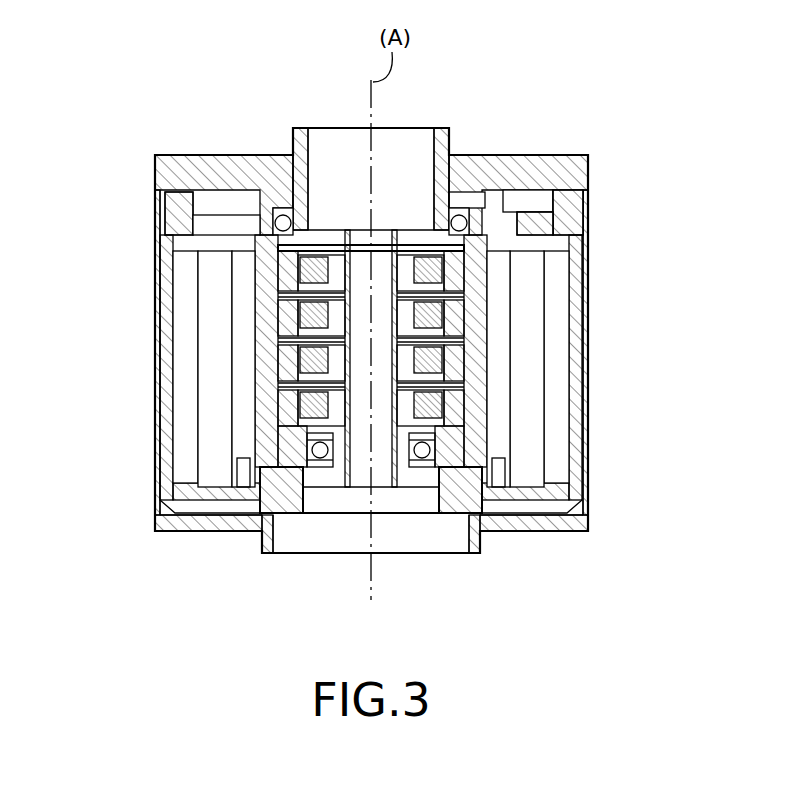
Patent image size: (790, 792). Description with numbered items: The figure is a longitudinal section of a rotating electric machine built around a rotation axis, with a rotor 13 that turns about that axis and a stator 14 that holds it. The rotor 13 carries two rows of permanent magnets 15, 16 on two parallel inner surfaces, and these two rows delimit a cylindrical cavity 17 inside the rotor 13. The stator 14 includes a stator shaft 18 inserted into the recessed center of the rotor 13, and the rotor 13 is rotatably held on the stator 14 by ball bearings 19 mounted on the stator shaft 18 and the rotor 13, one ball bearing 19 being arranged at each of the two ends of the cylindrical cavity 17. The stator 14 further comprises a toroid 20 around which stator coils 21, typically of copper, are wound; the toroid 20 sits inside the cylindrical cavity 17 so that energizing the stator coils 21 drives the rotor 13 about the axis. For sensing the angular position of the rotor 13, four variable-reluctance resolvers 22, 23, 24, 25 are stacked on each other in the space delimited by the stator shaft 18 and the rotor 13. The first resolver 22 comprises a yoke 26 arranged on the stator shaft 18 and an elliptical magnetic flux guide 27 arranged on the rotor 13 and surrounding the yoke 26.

The rotor 13 is at (146, 397).
The stator 14 is at (518, 145).
The permanent magnets 15 is at (558, 337).
The permanent magnets 16 is at (502, 393).
The cylindrical cavity 17 is at (527, 457).
The stator shaft 18 is at (383, 470).
The ball bearings 19 is at (279, 196).
The toroid 20 is at (217, 478).
The stator coils 21 is at (200, 457).
The first resolver 22 is at (327, 244).
The second resolver 23 is at (305, 292).
The third resolver 24 is at (305, 338).
The fourth resolver 25 is at (305, 385).
The yoke 26 is at (433, 260).
The elliptical magnetic flux guide 27 is at (457, 278).